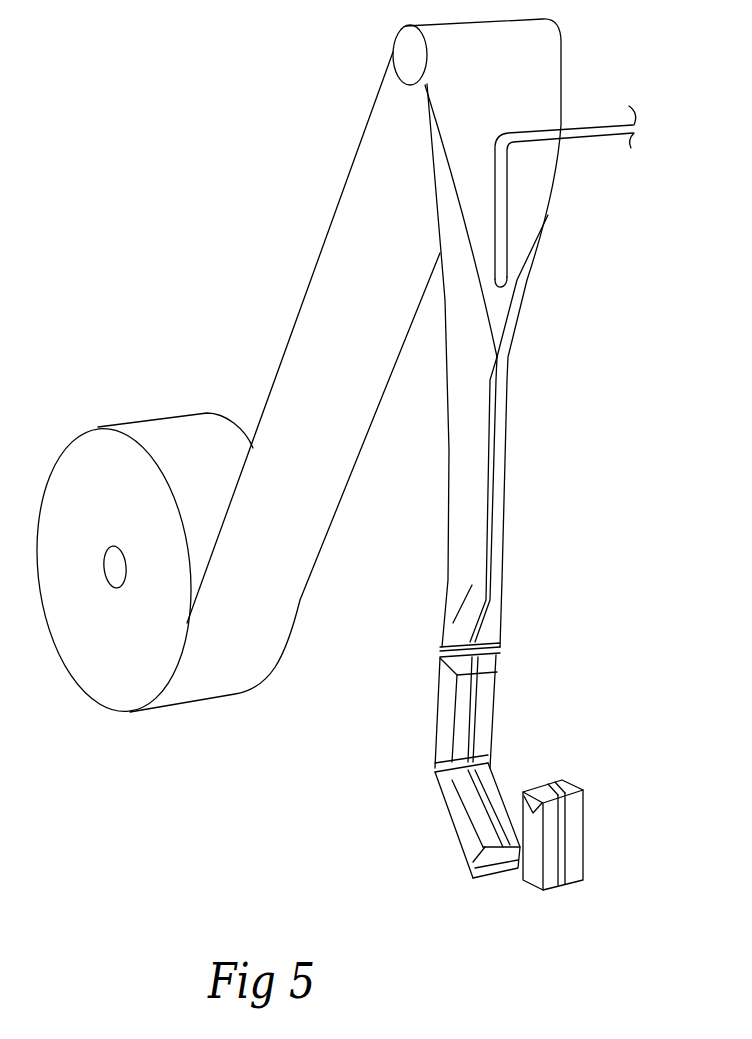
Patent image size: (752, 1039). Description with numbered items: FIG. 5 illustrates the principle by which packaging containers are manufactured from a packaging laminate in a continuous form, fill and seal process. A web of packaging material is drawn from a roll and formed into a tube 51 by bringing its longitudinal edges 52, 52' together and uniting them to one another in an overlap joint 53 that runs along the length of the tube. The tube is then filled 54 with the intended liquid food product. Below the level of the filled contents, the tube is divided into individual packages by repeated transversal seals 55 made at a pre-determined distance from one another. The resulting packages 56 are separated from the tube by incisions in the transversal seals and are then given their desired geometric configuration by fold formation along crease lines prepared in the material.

The tube 51 is at (470, 442).
The longitudinal edge 52 is at (546, 221).
The longitudinal edge 52' is at (562, 219).
The overlap joint 53 is at (500, 395).
The filling 54 is at (597, 127).
The transversal seal 55 is at (497, 648).
The package 56 is at (577, 837).